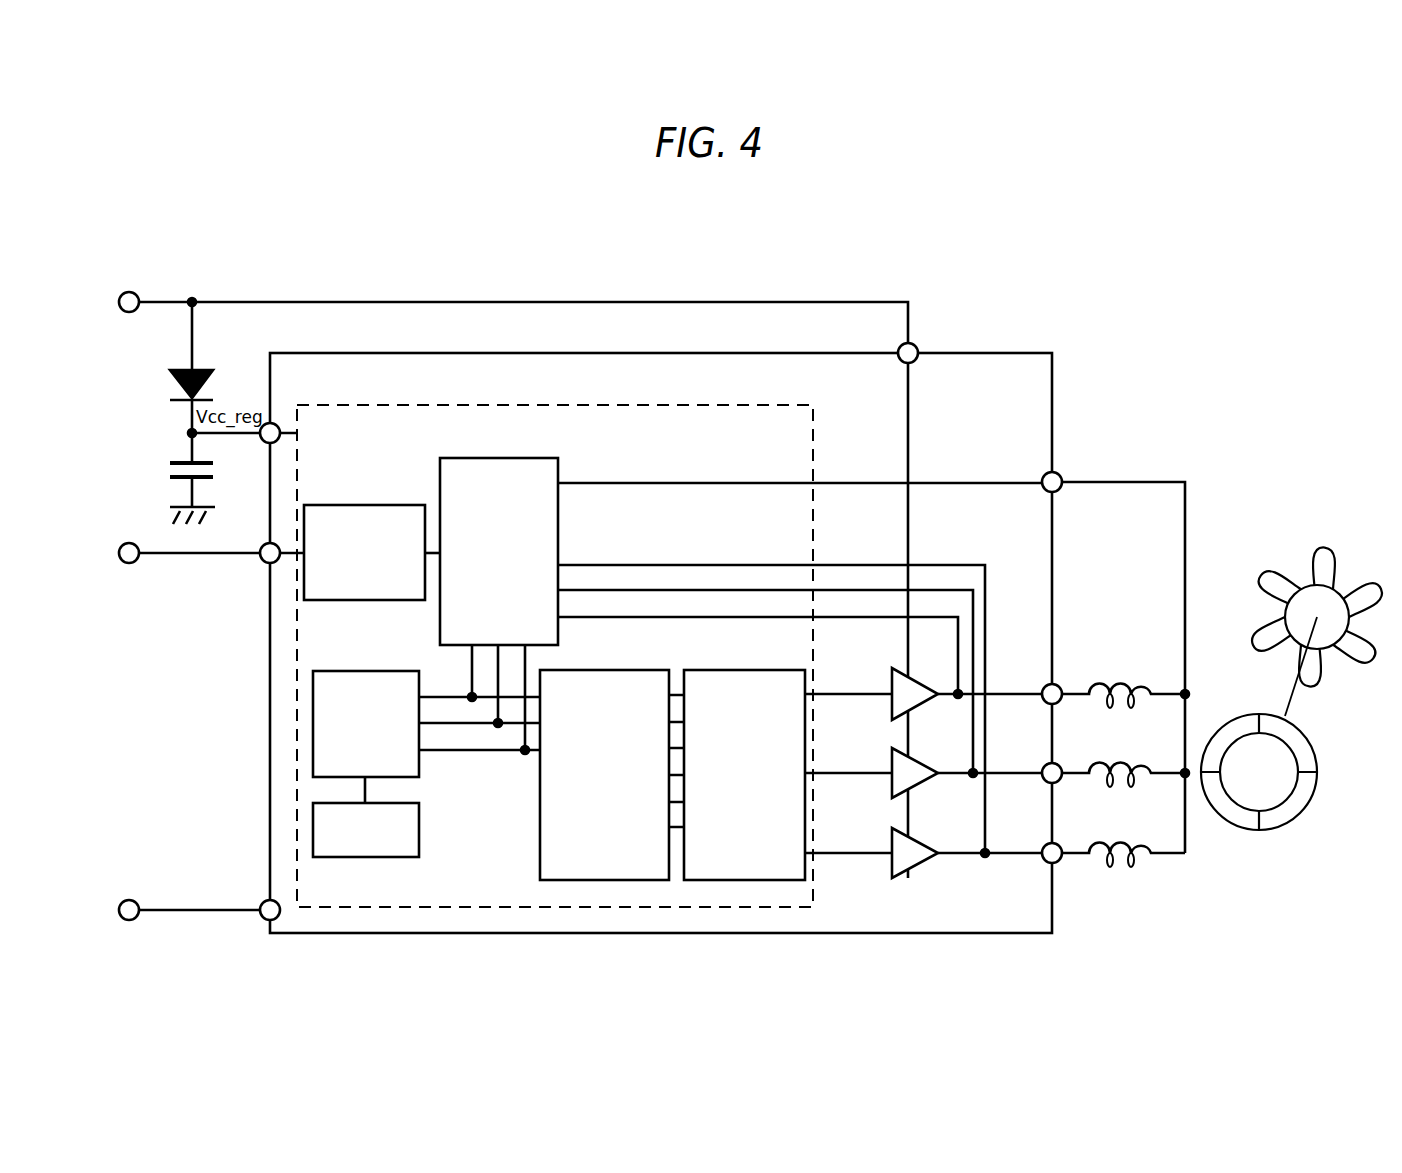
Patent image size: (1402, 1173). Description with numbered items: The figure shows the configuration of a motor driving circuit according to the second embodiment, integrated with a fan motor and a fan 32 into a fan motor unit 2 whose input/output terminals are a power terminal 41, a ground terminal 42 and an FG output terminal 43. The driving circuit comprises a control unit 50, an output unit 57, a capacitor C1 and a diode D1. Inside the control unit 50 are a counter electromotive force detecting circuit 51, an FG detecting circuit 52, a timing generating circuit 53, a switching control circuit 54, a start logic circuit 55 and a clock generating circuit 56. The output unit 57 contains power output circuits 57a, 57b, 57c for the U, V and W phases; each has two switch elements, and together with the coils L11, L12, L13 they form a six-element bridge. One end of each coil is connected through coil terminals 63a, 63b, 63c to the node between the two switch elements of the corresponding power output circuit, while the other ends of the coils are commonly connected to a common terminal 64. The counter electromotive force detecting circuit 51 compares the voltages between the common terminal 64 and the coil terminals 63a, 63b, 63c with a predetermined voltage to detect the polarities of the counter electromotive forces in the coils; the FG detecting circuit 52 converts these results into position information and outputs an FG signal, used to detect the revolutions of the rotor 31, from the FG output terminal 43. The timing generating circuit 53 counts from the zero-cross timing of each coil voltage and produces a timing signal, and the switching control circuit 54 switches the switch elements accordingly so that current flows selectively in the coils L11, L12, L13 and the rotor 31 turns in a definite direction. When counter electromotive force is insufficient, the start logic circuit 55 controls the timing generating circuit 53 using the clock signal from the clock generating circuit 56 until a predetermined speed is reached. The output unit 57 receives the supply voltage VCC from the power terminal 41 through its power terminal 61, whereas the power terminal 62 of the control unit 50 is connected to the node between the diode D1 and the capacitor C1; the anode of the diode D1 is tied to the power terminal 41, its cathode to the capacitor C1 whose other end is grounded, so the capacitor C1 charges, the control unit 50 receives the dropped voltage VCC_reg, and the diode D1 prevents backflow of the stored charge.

The fan motor unit 2 is at (1085, 303).
The power terminal 41 is at (129, 291).
The ground terminal 42 is at (129, 899).
The FG output terminal 43 is at (129, 564).
The control unit 50 is at (632, 405).
The counter electromotive force detecting circuit 51 is at (489, 458).
The FG detecting circuit 52 is at (354, 505).
The timing generating circuit 53 is at (606, 670).
The switching control circuit 54 is at (736, 670).
The start logic circuit 55 is at (354, 671).
The clock generating circuit 56 is at (356, 857).
The output unit 57 is at (928, 784).
The power output circuit 57a is at (889, 678).
The power output circuit 57b is at (889, 758).
The power output circuit 57c is at (889, 838).
The power terminal 61 is at (905, 364).
The power terminal 62 is at (265, 444).
The coil terminal 63a is at (1044, 684).
The coil terminal 63b is at (1044, 763).
The coil terminal 63c is at (1044, 843).
The common terminal 64 is at (1044, 472).
The rotor 31 is at (1298, 823).
The fan 32 is at (1330, 560).
The capacitor C1 is at (172, 388).
The diode D1 is at (172, 472).
The coil L11 is at (1117, 683).
The coil L12 is at (1117, 762).
The coil L13 is at (1117, 842).